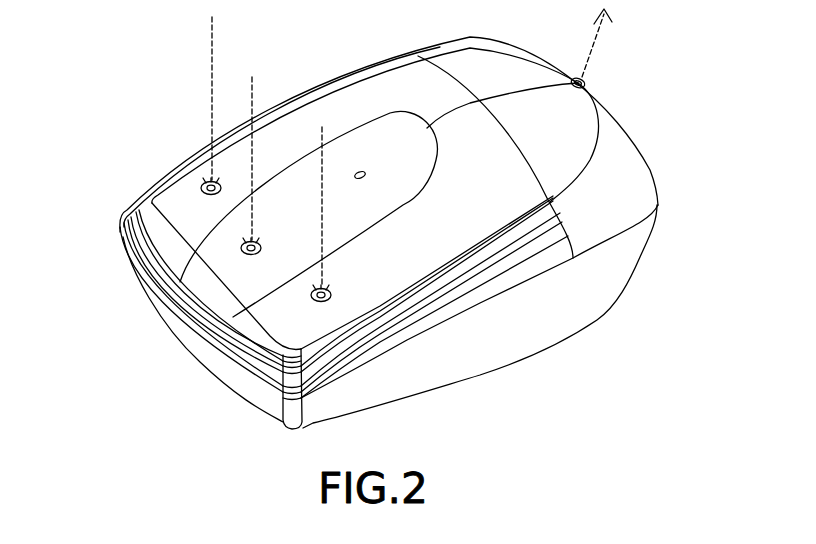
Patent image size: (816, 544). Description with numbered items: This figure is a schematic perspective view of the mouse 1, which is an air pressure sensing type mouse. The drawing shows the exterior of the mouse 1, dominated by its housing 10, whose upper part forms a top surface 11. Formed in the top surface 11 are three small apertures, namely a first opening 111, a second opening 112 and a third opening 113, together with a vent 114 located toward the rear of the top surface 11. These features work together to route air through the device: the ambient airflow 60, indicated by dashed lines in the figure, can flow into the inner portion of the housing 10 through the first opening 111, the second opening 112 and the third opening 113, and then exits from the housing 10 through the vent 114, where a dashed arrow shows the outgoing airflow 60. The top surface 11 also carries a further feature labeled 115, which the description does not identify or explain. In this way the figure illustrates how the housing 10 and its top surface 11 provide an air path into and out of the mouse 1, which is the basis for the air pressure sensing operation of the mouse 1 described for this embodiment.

The mouse 1 is at (109, 76).
The housing 10 is at (552, 326).
The top surface 11 is at (453, 56).
The ambient airflow 60 is at (213, 42).
The first opening 111 is at (168, 305).
The second opening 112 is at (124, 236).
The third opening 113 is at (372, 322).
The vent 114 is at (578, 86).
The central panel region 115 is at (366, 176).